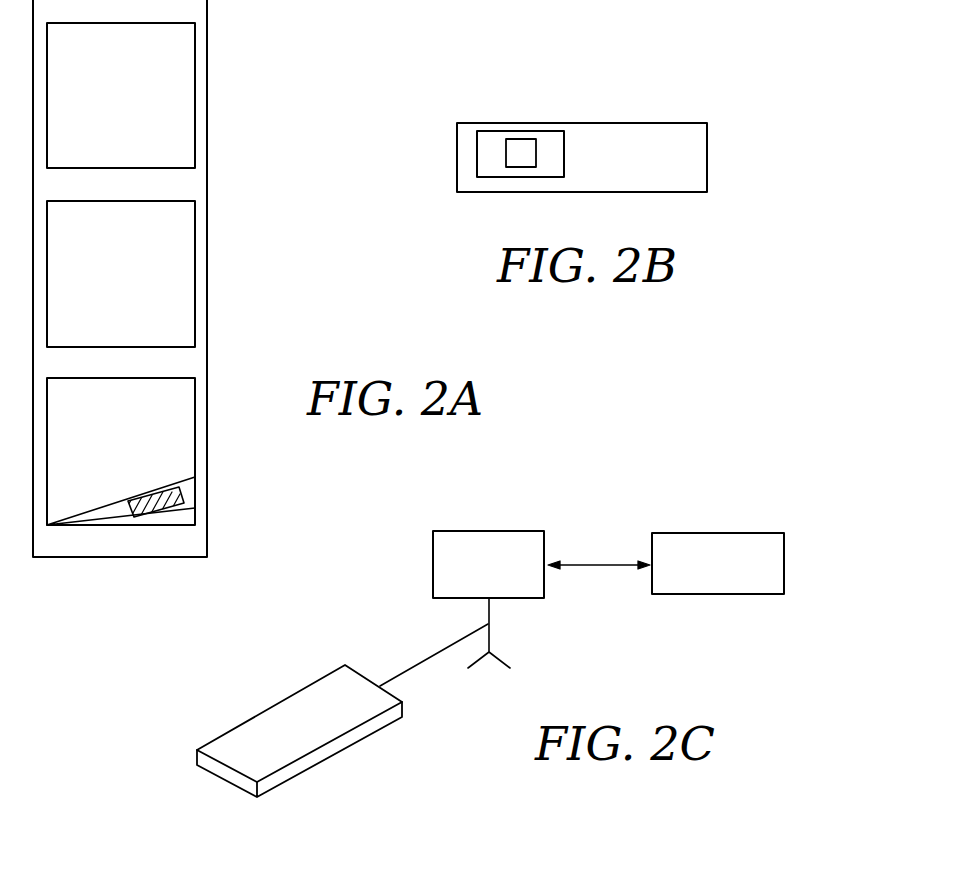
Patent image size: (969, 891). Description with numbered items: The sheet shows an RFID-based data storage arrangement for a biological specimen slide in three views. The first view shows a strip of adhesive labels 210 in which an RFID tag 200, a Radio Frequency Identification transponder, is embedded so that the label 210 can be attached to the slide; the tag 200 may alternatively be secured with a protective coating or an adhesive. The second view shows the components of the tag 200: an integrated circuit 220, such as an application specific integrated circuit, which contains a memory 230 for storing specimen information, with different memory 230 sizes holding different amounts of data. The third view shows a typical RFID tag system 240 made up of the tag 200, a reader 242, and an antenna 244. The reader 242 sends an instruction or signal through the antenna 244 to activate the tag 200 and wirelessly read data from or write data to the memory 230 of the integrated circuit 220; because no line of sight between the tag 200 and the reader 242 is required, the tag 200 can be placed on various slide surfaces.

In FIG. 2A, the RFID tag 200 is at (183, 490).
In FIG. 2B, the RFID tag 200 is at (655, 123).
In FIG. 2C, the RFID tag 200 is at (718, 550).
In FIG. 2A, the label 210 is at (173, 278).
In FIG. 2B, the integrated circuit 220 is at (548, 131).
In FIG. 2B, the memory 230 is at (512, 139).
In FIG. 2C, the RFID tag system 240 is at (362, 612).
In FIG. 2C, the reader 242 is at (205, 767).
In FIG. 2C, the antenna 244 is at (490, 545).